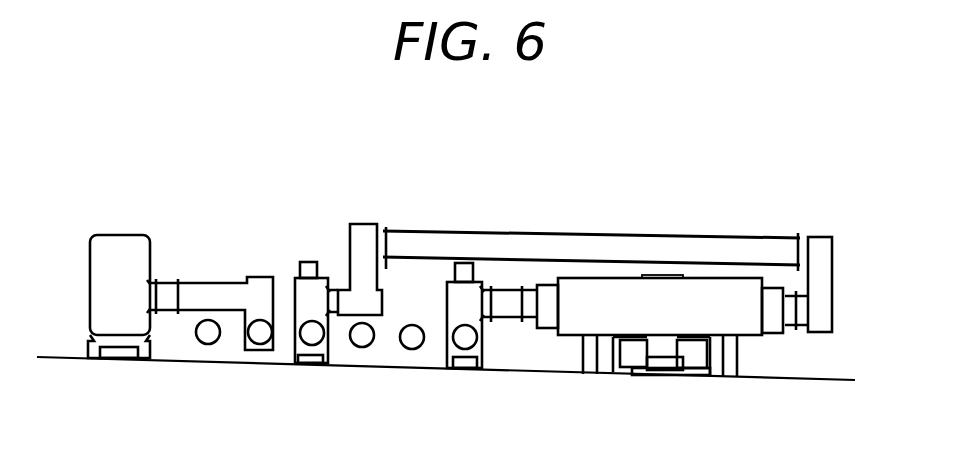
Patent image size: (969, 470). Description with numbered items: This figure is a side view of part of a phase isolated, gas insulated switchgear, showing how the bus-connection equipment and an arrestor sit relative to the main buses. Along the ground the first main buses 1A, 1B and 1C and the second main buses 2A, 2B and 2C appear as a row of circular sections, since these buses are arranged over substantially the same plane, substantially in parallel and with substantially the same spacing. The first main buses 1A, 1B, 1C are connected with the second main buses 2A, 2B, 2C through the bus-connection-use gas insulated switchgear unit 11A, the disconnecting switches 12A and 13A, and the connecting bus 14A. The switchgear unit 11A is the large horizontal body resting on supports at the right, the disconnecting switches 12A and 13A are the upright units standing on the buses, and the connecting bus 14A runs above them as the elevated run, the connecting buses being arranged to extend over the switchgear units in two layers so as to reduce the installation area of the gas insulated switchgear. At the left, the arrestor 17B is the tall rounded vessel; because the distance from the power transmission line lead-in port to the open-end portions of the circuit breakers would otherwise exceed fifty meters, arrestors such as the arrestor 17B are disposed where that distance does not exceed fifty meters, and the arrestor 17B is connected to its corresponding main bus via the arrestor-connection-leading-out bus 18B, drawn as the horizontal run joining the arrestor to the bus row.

The first main bus 1A is at (465, 338).
The first main bus 1B is at (412, 338).
The first main bus 1C is at (362, 336).
The second main bus 2A is at (312, 334).
The second main bus 2B is at (260, 333).
The second main bus 2C is at (208, 333).
The bus-connection-use gas insulated switchgear unit 11A is at (698, 298).
The disconnecting switch 12A is at (455, 293).
The disconnecting switch 13A is at (297, 287).
The connecting bus 14A is at (552, 245).
The arrestor 17B is at (113, 245).
The arrestor-connection-leading-out bus 18B is at (210, 289).